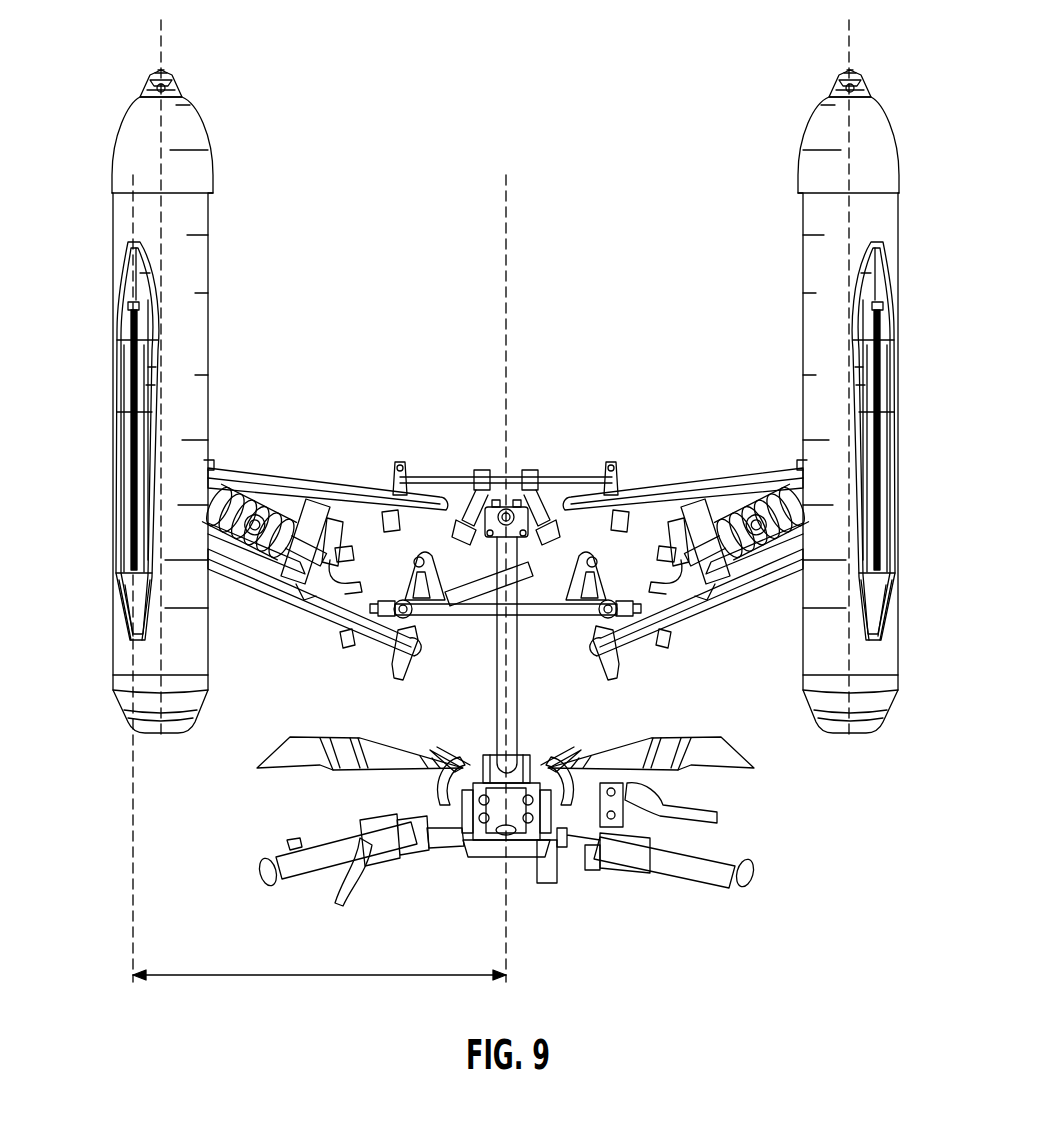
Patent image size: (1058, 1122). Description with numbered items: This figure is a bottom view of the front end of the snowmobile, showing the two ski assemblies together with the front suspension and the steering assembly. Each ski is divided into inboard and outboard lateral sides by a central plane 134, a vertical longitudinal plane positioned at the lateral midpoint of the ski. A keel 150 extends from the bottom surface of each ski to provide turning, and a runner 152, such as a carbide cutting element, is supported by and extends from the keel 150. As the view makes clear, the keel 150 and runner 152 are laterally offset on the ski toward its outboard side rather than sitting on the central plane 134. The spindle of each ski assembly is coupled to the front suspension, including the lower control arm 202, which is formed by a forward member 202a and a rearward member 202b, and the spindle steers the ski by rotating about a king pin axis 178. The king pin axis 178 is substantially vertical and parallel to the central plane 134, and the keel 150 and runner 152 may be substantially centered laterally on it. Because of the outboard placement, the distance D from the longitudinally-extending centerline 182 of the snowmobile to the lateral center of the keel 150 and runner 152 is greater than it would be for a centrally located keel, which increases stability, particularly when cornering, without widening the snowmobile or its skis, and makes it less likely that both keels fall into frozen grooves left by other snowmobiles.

The central plane 134 is at (162, 33).
The keel 150 is at (118, 343).
The runner 152 is at (130, 402).
The king pin axis 178 is at (132, 882).
The longitudinally-extending centerline 182 is at (508, 935).
The lower control arm 202 is at (506, 581).
The forward member 202a is at (680, 481).
The rearward member 202b is at (722, 596).
The distance D is at (321, 975).